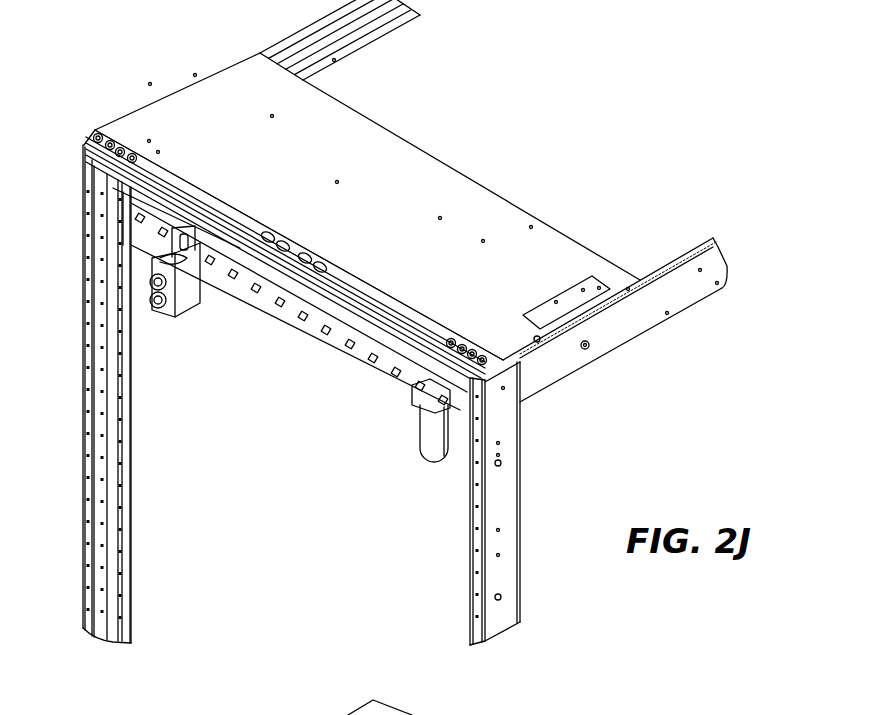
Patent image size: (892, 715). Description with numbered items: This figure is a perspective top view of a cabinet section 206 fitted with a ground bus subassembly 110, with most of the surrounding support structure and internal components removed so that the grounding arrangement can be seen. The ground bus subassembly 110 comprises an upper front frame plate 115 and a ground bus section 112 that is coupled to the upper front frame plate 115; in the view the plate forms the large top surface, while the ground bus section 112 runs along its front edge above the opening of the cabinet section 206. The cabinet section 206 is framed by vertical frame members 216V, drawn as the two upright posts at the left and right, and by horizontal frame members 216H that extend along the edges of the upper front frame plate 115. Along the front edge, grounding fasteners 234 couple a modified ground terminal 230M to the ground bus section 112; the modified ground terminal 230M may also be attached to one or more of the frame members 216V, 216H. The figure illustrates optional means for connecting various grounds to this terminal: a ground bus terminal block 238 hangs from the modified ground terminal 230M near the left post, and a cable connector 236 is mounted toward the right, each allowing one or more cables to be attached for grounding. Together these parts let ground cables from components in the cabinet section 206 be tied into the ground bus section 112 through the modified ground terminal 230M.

The ground bus subassembly 110 is at (484, 100).
The upper front frame plate 115 is at (470, 160).
The ground bus section 112 is at (388, 297).
The grounding fasteners 234 is at (272, 235).
The horizontal frame member 216H is at (278, 43).
The vertical frame member 216V is at (127, 467).
The modified ground terminal 230M is at (357, 357).
The ground bus terminal block 238 is at (185, 312).
The cable connector 236 is at (420, 423).
The cabinet section 206 is at (278, 636).